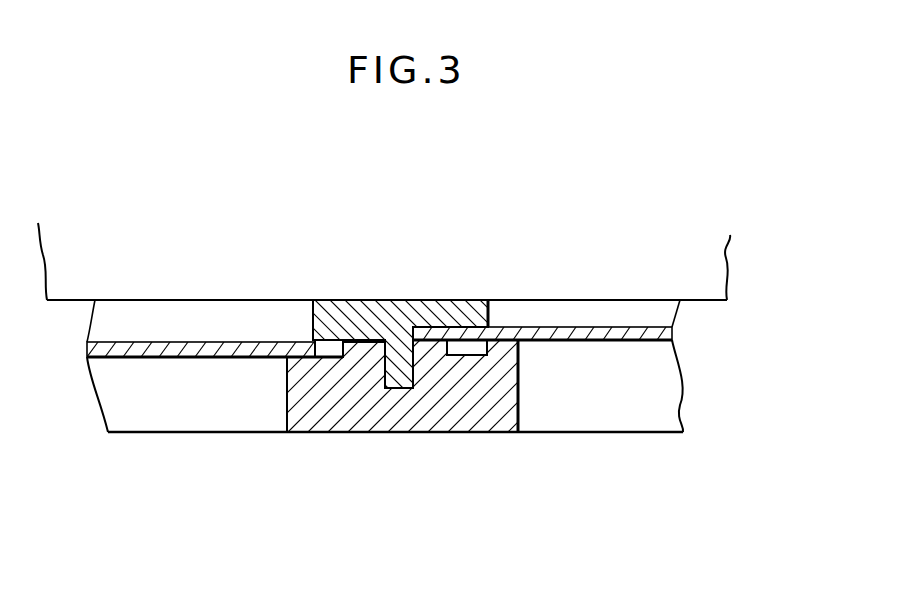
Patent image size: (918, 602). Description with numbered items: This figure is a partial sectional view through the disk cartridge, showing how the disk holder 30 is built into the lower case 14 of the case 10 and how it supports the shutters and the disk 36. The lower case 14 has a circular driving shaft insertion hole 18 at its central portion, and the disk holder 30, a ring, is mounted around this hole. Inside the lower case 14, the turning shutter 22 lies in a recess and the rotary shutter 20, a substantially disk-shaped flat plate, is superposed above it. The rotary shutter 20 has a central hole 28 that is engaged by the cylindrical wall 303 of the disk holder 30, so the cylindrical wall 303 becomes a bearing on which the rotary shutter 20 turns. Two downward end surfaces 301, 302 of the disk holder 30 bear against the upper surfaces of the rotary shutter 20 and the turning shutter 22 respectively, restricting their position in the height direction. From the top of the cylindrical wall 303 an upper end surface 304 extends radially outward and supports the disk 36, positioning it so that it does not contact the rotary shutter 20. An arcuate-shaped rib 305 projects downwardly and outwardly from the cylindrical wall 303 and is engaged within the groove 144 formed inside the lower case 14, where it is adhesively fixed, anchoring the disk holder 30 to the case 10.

The case 10 is at (752, 370).
The lower case 14 is at (680, 415).
The driving shaft insertion hole 18 is at (287, 404).
The rotary shutter 20 is at (662, 319).
The turning shutter 22 is at (108, 342).
The central hole 28 is at (408, 330).
The disk holder 30 is at (490, 318).
The disk 36 is at (727, 273).
The groove 144 is at (380, 367).
The downward end surface 301 is at (458, 335).
The downward end surface 302 is at (316, 346).
The cylindrical wall 303 is at (417, 333).
The upper end surface 304 is at (413, 302).
The arcuate-shaped rib 305 is at (400, 388).